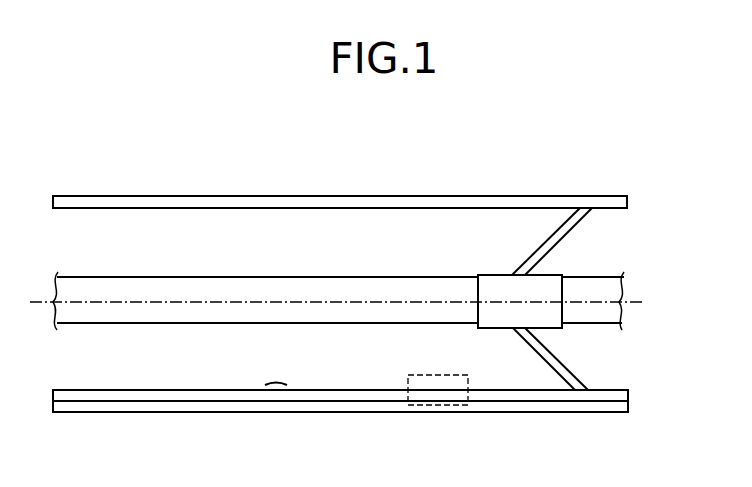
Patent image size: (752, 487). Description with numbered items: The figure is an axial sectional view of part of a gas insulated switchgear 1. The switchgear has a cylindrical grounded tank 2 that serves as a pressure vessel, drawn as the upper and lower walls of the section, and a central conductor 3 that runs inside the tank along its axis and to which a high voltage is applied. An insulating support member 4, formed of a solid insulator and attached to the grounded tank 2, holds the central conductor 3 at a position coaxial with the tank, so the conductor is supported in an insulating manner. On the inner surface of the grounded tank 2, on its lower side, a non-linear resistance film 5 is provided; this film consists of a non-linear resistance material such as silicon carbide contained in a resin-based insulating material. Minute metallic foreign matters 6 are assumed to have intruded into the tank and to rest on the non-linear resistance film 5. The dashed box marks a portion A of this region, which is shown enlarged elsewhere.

The gas insulated switchgear 1 is at (399, 202).
The grounded tank 2 is at (541, 202).
The central conductor 3 is at (603, 275).
The insulating support member 4 is at (562, 362).
The non-linear resistance film 5 is at (348, 383).
The metallic foreign matters 6 is at (277, 388).
The portion A is at (460, 407).